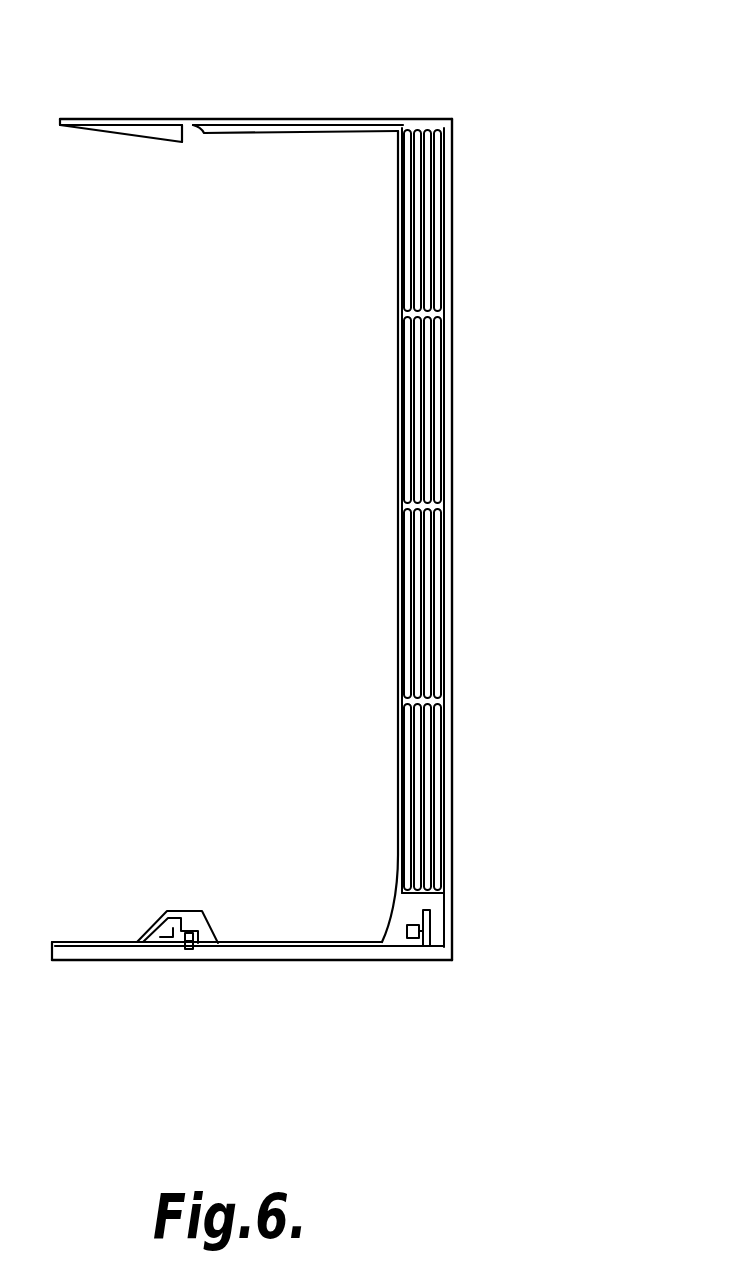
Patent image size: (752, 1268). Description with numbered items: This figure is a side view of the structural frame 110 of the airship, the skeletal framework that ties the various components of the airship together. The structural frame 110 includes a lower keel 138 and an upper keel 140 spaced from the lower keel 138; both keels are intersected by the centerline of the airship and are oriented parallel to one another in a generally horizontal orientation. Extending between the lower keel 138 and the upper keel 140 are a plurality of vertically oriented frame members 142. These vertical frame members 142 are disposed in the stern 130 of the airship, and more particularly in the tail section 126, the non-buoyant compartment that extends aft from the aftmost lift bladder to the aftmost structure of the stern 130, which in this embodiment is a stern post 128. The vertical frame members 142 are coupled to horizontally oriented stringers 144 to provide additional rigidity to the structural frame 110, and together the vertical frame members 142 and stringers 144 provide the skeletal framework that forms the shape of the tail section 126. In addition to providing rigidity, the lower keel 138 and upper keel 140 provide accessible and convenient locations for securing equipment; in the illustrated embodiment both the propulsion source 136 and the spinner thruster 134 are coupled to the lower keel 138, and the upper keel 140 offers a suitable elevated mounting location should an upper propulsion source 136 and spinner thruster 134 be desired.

The structural frame 110 is at (518, 102).
The tail section 126 is at (457, 843).
The stern post 128 is at (454, 620).
The stern 130 is at (422, 117).
The spinner thruster 134 is at (432, 960).
The propulsion source 136 is at (173, 912).
The lower keel 138 is at (262, 960).
The upper keel 140 is at (247, 118).
The vertical frame members 142 is at (442, 190).
The stringers 144 is at (410, 313).